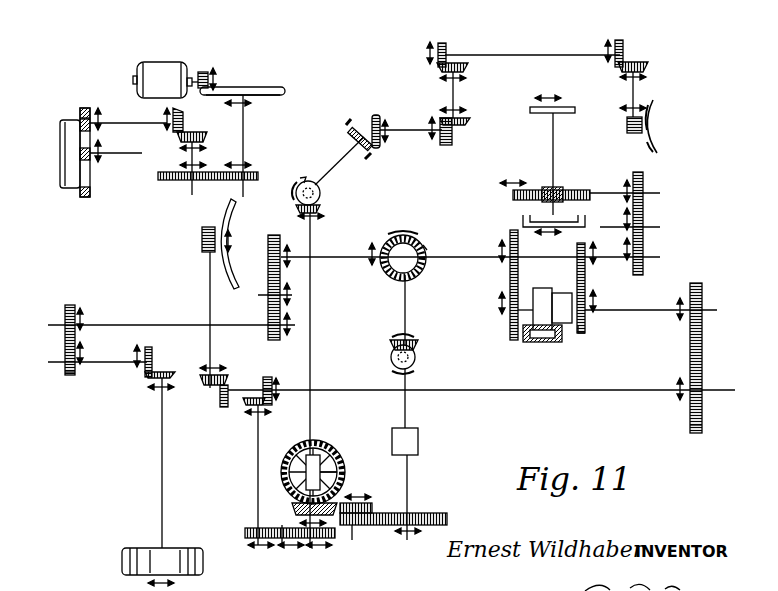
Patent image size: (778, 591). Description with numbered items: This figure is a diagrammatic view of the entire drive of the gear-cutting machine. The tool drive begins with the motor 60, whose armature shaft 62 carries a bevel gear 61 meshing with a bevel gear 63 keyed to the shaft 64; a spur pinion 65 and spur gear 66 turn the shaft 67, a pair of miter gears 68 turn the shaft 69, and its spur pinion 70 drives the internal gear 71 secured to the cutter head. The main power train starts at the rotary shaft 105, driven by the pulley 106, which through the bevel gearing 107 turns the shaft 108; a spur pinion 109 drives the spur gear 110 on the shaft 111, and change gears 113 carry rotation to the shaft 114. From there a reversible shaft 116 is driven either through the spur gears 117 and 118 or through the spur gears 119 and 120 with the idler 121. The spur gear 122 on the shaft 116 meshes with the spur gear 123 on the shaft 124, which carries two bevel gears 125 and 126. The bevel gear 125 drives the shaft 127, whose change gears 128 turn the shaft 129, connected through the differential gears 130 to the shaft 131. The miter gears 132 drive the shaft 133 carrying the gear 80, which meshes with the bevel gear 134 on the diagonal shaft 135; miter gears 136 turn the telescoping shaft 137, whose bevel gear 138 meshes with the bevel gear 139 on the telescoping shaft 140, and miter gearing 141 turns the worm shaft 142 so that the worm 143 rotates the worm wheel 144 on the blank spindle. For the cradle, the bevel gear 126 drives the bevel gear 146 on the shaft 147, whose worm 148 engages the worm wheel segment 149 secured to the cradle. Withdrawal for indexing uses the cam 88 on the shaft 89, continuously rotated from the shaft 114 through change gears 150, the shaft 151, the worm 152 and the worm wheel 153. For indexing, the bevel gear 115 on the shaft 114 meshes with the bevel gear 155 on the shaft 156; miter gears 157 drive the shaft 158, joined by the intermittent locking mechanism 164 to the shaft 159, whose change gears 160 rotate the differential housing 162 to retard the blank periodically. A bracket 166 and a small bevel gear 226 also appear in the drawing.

The motor 60 is at (160, 63).
The bevel gear 61 is at (208, 74).
The armature shaft 62 is at (194, 76).
The bevel gear 63 is at (285, 90).
The shaft 64 is at (245, 140).
The spur pinion 65 is at (300, 181).
The spur gear 66 is at (158, 177).
The shaft 67 is at (192, 160).
The miter gears 68 is at (184, 120).
The shaft 69 is at (117, 123).
The spur pinion 70 is at (92, 134).
The internal gear 71 is at (85, 108).
The gear 80 is at (353, 127).
The cam 88 is at (567, 107).
The shaft 89 is at (555, 140).
The rotary shaft 105 is at (163, 497).
The pulley 106 is at (205, 568).
The bevel gearing 107 is at (165, 368).
The shaft 108 is at (107, 372).
The spur pinion 109 is at (65, 372).
The spur gear 110 is at (65, 308).
The shaft 111 is at (118, 320).
The change gears 113 is at (268, 305).
The shaft 114 is at (328, 255).
The bevel gear 115 is at (388, 244).
The reversible shaft 116 is at (618, 308).
The spur gear 117 is at (510, 265).
The spur gear 118 is at (523, 335).
The spur gear 119 is at (585, 250).
The spur gear 120 is at (587, 335).
The idler 121 is at (576, 283).
The spur gear 122 is at (702, 300).
The spur gear 123 is at (700, 435).
The shaft 124 is at (570, 390).
The bevel gear 125 is at (272, 382).
The bevel gear 126 is at (233, 380).
The shaft 127 is at (258, 485).
The change gears 128 is at (290, 540).
The shaft 129 is at (290, 506).
The differential gears 130 is at (343, 457).
The shaft 131 is at (312, 375).
The miter gears 132 is at (320, 207).
The shaft 133 is at (355, 152).
The bevel gear 134 is at (378, 116).
The diagonal shaft 135 is at (402, 133).
The miter gears 136 is at (457, 133).
The telescoping shaft 137 is at (456, 100).
The bevel gear 138 is at (468, 66).
The bevel gear 139 is at (446, 47).
The telescoping shaft 140 is at (540, 53).
The miter gearing 141 is at (624, 48).
The worm shaft 142 is at (640, 90).
The worm 143 is at (627, 130).
The worm wheel 144 is at (657, 147).
The bevel gear 146 is at (218, 392).
The shaft 147 is at (210, 292).
The worm 148 is at (202, 233).
The worm wheel segment 149 is at (238, 220).
The change gears 150 is at (645, 215).
The shaft 151 is at (598, 191).
The worm 152 is at (560, 190).
The worm wheel 153 is at (531, 190).
The bevel gear 155 is at (425, 248).
The shaft 156 is at (415, 295).
The miter gears 157 is at (418, 353).
The shaft 158 is at (410, 400).
The shaft 159 is at (410, 486).
The change gears 160 is at (385, 525).
The differential housing 162 is at (340, 476).
The intermittent locking mechanism 164 is at (418, 437).
The bracket 166 is at (523, 219).
The bevel gear 226 is at (246, 406).